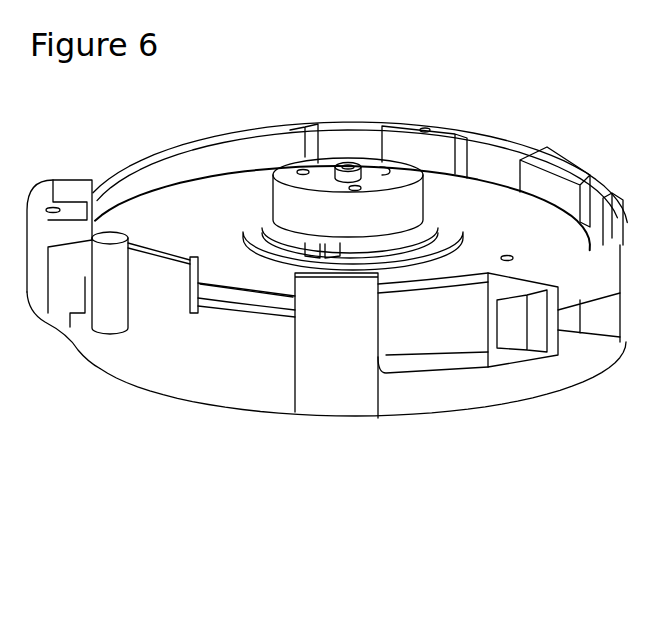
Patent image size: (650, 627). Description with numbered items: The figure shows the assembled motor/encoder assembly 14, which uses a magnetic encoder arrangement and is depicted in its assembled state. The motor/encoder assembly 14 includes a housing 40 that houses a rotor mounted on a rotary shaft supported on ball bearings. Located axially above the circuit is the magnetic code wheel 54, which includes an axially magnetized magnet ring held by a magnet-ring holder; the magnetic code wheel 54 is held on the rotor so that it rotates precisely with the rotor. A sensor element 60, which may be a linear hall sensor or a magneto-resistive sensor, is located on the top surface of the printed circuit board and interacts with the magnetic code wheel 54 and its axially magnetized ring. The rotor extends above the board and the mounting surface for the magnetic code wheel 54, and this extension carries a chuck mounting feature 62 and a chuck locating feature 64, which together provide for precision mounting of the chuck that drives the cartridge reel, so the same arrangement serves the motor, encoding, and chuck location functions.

The motor/encoder assembly 14 is at (348, 540).
The housing 40 is at (327, 397).
The magnetic code wheel 54 is at (480, 187).
The sensor element 60 is at (222, 323).
The chuck mounting feature 62 is at (324, 168).
The chuck locating feature 64 is at (363, 166).